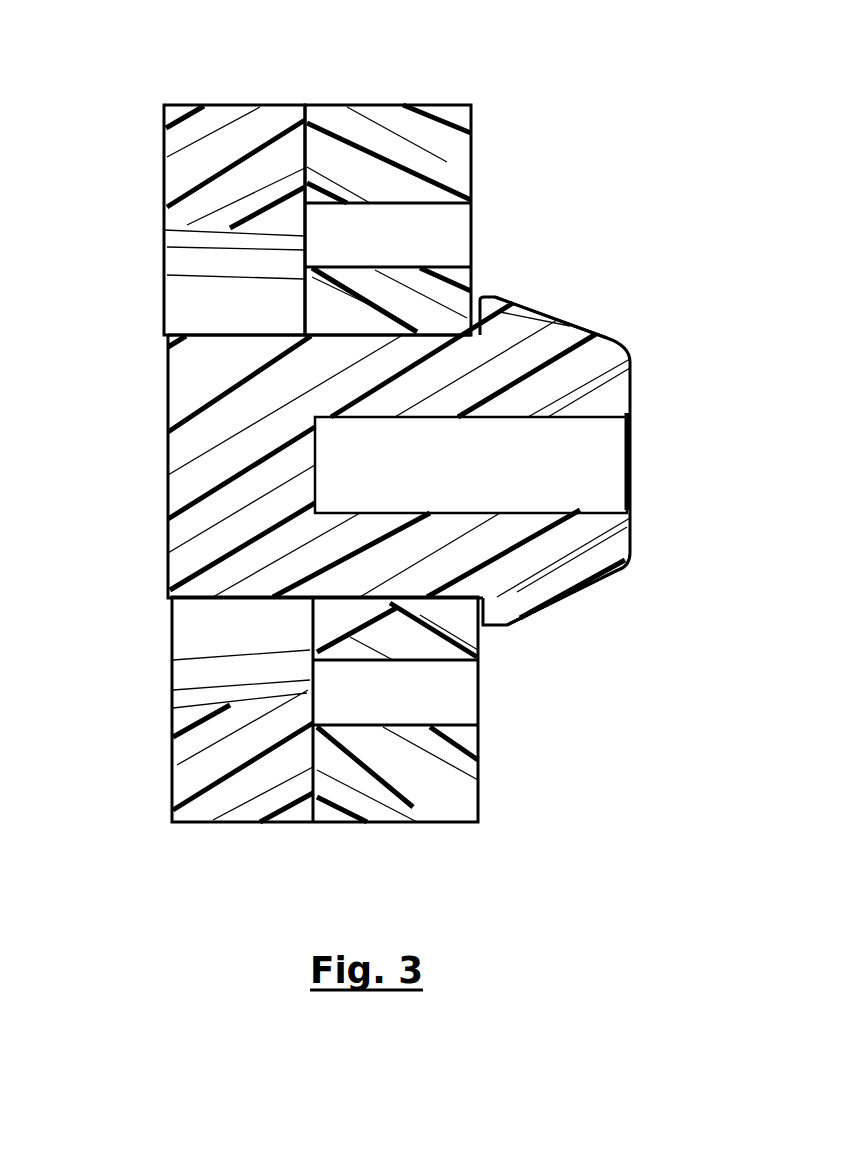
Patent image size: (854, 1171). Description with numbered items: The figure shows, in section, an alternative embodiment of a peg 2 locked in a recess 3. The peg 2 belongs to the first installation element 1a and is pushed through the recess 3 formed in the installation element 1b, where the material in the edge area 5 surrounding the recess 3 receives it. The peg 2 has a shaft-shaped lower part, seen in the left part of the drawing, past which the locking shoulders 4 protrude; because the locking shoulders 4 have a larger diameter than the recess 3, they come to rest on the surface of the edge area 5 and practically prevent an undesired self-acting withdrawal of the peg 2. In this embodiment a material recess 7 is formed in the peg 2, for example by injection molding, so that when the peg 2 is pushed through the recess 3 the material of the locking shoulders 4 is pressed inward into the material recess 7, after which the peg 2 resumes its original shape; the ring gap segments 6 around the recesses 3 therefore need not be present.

The first installation element 1a is at (200, 185).
The installation element 1b is at (430, 165).
The peg 2 is at (222, 388).
The recess 3 is at (362, 336).
The locking shoulders 4 is at (498, 312).
The edge area 5 is at (447, 293).
The ring gap segments 6 is at (428, 230).
The material recess 7 is at (427, 465).